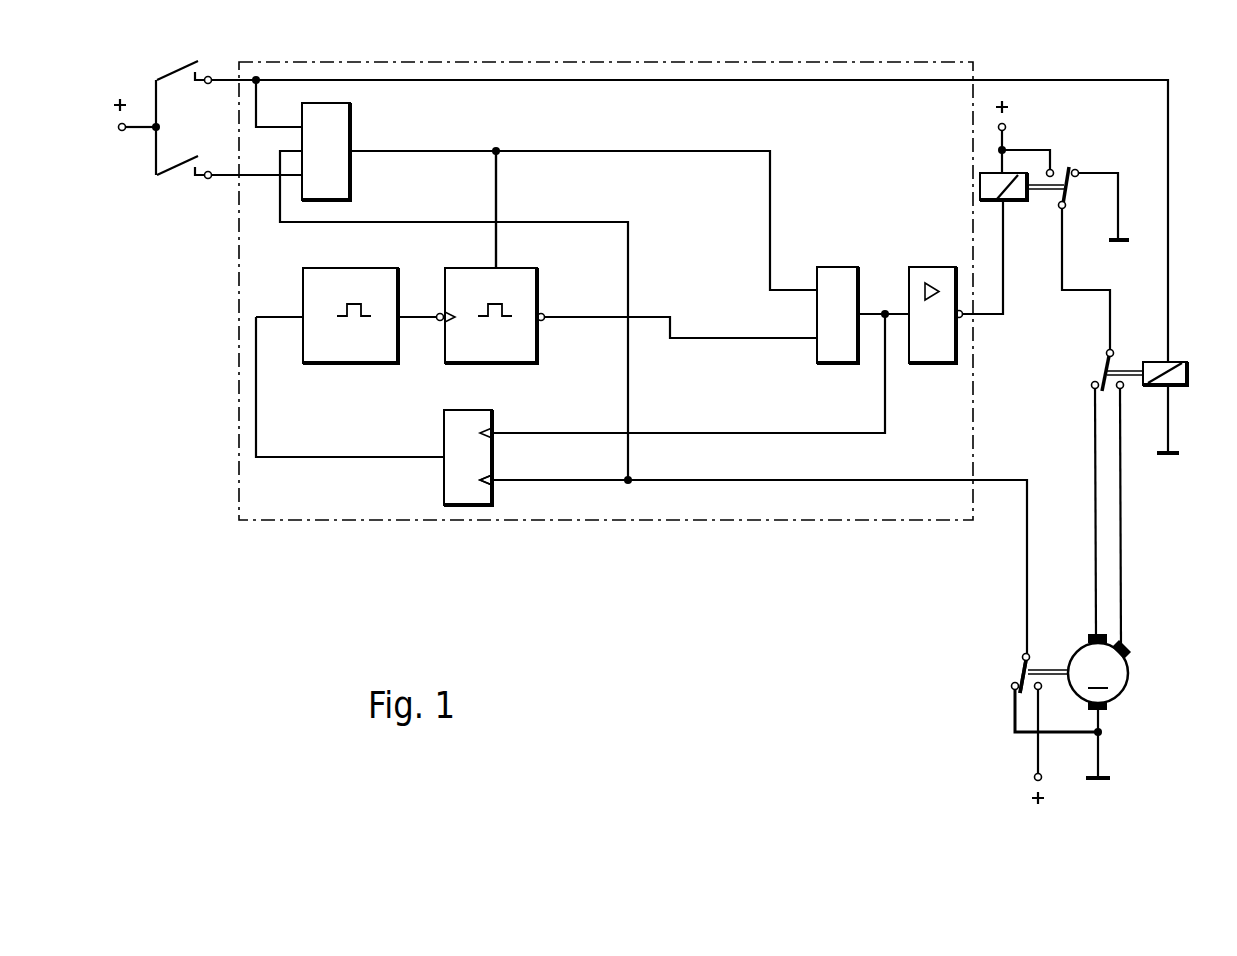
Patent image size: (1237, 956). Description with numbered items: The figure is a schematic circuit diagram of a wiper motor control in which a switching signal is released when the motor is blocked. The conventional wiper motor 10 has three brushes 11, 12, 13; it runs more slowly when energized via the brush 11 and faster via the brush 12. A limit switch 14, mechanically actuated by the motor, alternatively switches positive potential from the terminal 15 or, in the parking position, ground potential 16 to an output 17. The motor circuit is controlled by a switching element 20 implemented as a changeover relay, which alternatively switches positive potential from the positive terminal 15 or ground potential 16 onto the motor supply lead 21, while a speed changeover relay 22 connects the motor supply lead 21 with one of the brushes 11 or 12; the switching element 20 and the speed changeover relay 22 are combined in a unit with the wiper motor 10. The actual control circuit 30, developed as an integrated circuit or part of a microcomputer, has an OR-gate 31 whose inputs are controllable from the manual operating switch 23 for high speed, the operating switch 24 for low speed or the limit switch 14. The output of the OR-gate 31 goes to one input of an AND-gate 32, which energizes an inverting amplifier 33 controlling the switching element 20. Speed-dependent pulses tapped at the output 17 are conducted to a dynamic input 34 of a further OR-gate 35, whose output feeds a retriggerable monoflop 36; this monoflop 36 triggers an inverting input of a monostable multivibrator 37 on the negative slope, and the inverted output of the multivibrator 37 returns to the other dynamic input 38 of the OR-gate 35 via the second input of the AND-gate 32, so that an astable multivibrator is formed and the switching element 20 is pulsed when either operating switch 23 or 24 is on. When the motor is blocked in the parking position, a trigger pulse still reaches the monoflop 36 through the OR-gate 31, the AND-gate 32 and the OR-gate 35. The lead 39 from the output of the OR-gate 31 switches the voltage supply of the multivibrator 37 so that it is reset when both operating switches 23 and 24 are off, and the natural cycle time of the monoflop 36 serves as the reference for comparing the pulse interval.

The wiper motor 10 is at (1117, 673).
The brush 11 is at (1100, 637).
The brush 12 is at (1123, 650).
The brush 13 is at (1102, 708).
The limit switch 14 is at (1008, 675).
The positive terminal 15 is at (123, 132).
The ground potential 16 is at (1120, 212).
The output 17 is at (1028, 655).
The switching element 20 is at (1020, 197).
The motor supply lead 21 is at (1063, 260).
The speed changeover relay 22 is at (1180, 367).
The operating switch 23 is at (177, 72).
The operating switch 24 is at (186, 157).
The control circuit 30 is at (957, 72).
The OR-gate 31 is at (345, 133).
The AND-gate 32 is at (845, 283).
The inverting amplifier 33 is at (933, 273).
The dynamic input 34 is at (493, 485).
The OR-gate 35 is at (455, 495).
The monoflop 36 is at (382, 280).
The monostable multivibrator 37 is at (538, 278).
The dynamic input 38 is at (480, 427).
The lead 39 is at (497, 197).